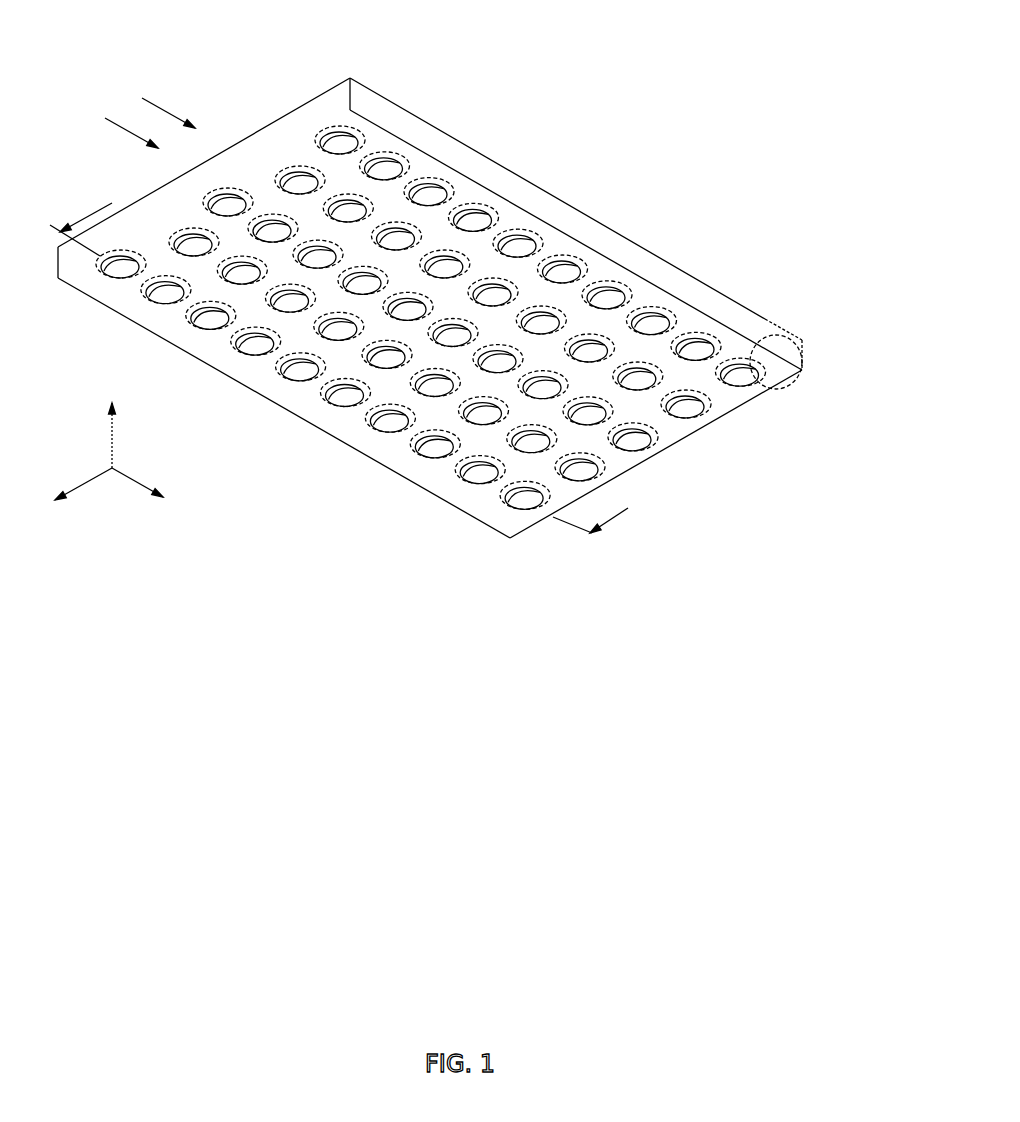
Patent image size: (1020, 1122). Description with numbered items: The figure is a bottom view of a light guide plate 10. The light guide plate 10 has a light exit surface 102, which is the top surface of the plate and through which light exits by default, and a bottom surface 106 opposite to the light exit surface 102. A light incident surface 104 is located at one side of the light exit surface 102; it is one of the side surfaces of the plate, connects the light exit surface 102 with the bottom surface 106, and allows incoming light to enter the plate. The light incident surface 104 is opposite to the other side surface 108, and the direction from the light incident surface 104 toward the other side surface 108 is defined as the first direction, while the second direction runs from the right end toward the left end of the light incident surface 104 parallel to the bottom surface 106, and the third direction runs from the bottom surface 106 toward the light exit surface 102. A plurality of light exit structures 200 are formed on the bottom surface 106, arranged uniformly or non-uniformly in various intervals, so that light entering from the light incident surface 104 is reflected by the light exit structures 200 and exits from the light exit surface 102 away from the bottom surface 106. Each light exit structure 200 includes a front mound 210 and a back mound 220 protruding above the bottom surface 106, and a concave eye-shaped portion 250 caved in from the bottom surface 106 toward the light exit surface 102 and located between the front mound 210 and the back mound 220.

The light guide plate 10 is at (618, 74).
The light exit surface 102 is at (630, 241).
The light incident surface 104 is at (290, 128).
The bottom surface 106 is at (725, 409).
The other side surface 108 is at (673, 448).
The light exit structure 200 is at (845, 287).
The front mound 210 is at (731, 362).
The back mound 220 is at (793, 391).
The concave eye-shaped portion 250 is at (748, 372).